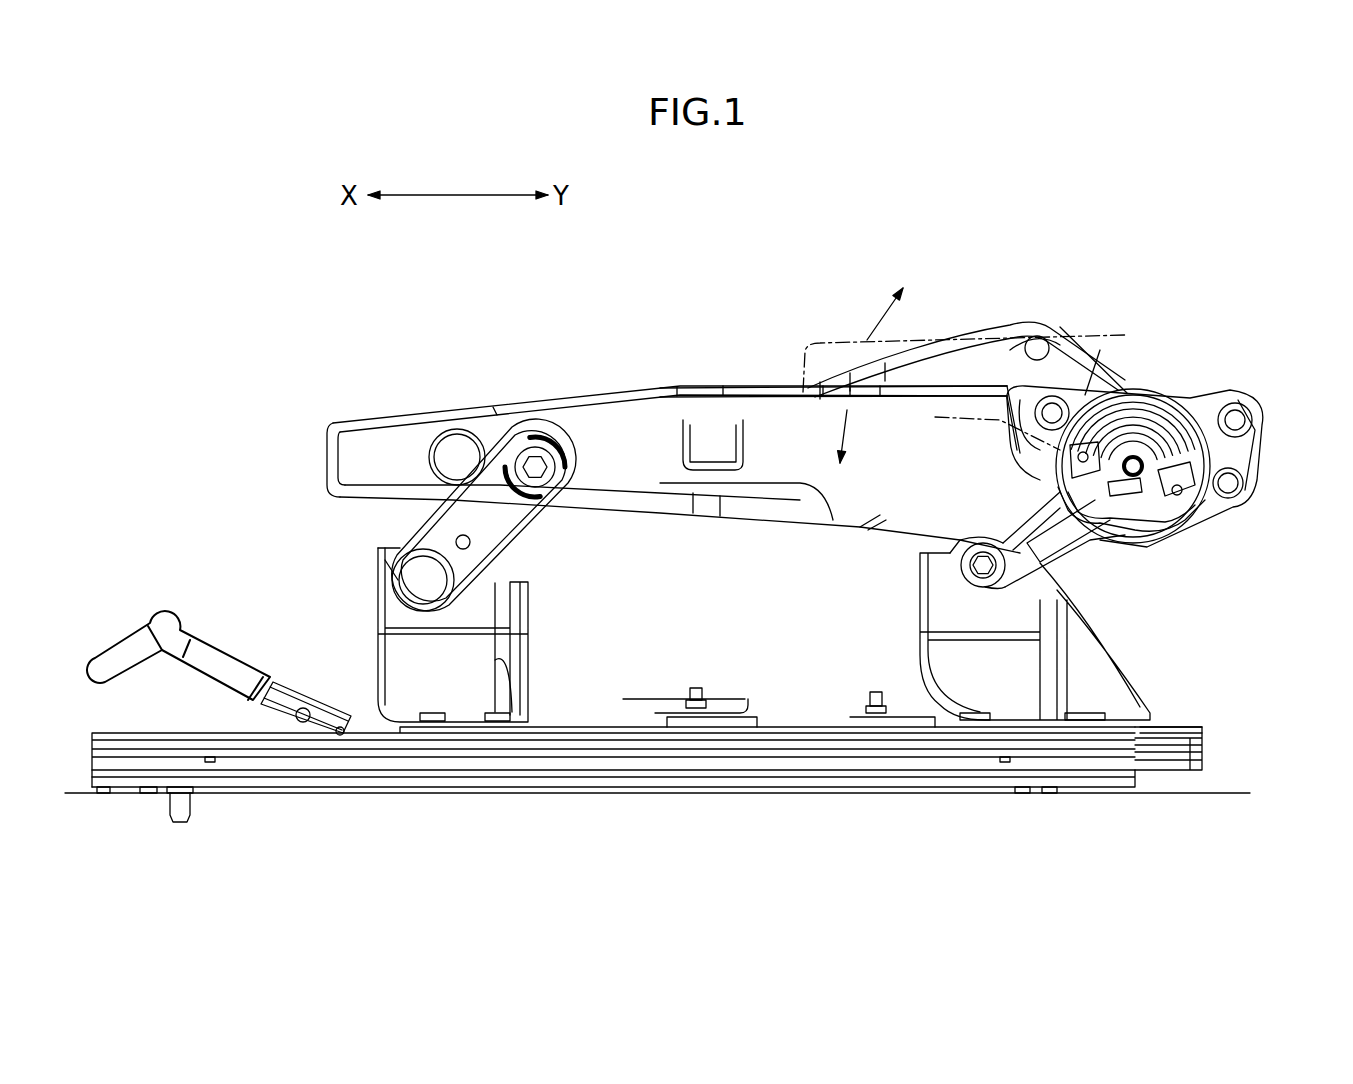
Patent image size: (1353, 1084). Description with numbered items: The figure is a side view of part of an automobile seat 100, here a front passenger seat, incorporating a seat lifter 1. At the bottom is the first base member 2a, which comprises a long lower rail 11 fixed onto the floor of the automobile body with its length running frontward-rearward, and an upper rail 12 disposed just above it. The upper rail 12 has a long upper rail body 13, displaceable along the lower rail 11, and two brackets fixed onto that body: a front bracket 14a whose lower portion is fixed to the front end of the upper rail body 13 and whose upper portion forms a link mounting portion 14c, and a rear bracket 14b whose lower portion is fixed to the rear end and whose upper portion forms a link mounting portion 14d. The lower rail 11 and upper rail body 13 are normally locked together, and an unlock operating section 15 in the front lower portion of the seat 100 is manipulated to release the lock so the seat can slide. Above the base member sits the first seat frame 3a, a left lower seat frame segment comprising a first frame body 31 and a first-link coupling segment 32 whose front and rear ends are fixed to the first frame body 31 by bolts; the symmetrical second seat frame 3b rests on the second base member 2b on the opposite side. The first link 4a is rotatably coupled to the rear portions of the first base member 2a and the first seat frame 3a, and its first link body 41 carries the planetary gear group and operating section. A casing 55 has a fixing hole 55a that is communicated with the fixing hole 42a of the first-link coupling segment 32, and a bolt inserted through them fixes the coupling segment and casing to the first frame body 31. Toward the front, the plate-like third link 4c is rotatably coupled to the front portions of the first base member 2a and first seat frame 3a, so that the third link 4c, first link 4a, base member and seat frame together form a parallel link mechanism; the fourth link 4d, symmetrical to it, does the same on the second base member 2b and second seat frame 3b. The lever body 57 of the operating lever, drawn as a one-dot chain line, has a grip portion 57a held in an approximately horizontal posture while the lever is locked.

The automobile seat 100 is at (1197, 290).
The seat lifter 1 is at (1157, 425).
The first base member 2a is at (700, 824).
The second base member 2b is at (651, 821).
The lower rail 11 is at (1105, 787).
The upper rail 12 is at (1178, 773).
The upper rail body 13 is at (1177, 722).
The front bracket 14a is at (528, 643).
The rear bracket 14b is at (920, 607).
The link mounting portion 14c is at (388, 578).
The link mounting portion 14d is at (960, 565).
The unlock operating section 15 is at (157, 630).
The first seat frame 3a is at (673, 424).
The second seat frame 3b is at (587, 395).
The first frame body 31 is at (700, 388).
The first-link coupling segment 32 is at (1235, 457).
The first link 4a is at (1077, 540).
The first link body 41 is at (1048, 543).
The fixing hole 42a is at (1052, 385).
The third link 4c is at (524, 515).
The fourth link 4d is at (507, 543).
The casing 55 is at (1210, 500).
The fixing hole 55a is at (1058, 400).
The lever body 57 is at (935, 345).
The grip portion 57a is at (822, 345).